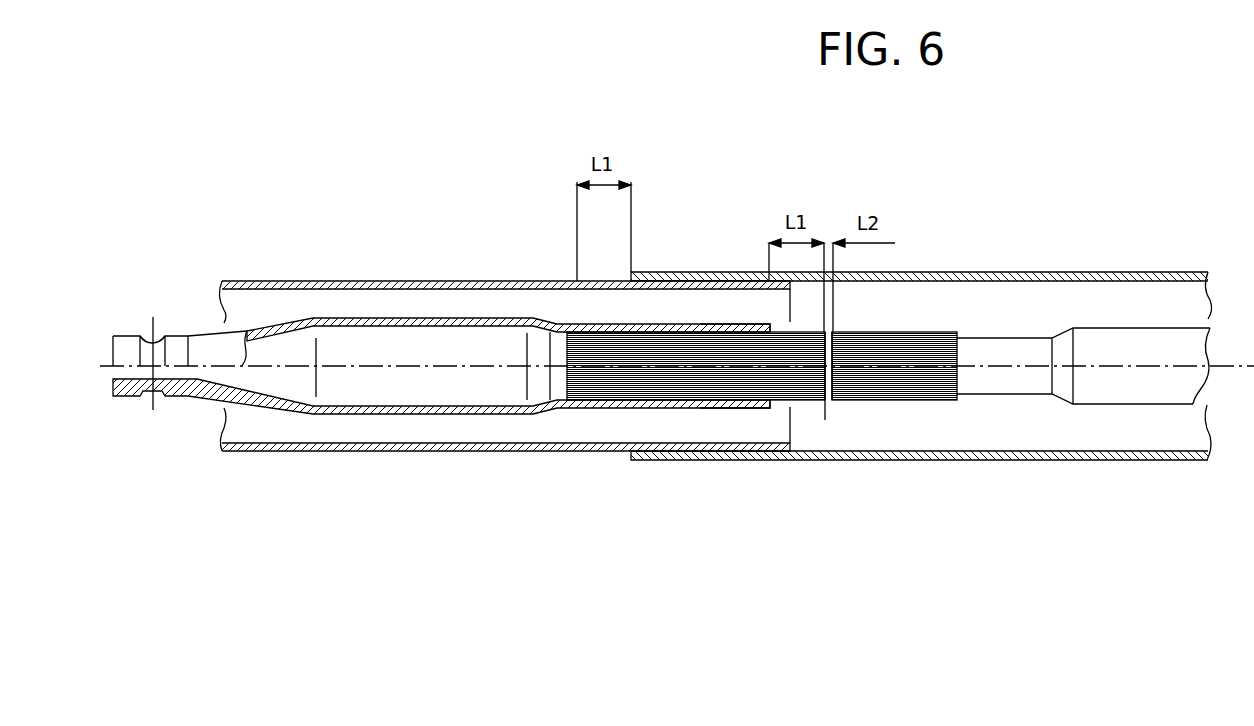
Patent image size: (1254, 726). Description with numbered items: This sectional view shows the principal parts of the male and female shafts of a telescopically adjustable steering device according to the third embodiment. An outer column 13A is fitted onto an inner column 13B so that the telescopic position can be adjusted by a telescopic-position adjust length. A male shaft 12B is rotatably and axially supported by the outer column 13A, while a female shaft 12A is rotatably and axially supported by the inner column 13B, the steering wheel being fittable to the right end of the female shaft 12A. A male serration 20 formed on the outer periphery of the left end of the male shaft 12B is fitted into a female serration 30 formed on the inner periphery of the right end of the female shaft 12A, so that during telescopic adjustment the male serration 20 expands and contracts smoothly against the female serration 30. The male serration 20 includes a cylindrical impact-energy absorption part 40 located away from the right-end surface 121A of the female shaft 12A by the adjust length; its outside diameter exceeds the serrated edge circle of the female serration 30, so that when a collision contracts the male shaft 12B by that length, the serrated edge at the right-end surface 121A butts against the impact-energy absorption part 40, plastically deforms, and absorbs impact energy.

The female shaft 12A is at (450, 318).
The male shaft 12B is at (1108, 338).
The right-end surface (butting surface) of the female shaft 121A is at (771, 317).
The outer column 13A is at (1003, 272).
The inner column 13B is at (313, 281).
The male serration 20 is at (895, 410).
The female serration 30 is at (677, 400).
The impact-energy absorption part 40 is at (826, 399).